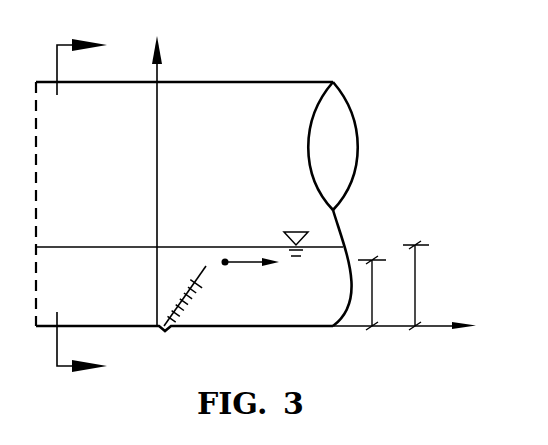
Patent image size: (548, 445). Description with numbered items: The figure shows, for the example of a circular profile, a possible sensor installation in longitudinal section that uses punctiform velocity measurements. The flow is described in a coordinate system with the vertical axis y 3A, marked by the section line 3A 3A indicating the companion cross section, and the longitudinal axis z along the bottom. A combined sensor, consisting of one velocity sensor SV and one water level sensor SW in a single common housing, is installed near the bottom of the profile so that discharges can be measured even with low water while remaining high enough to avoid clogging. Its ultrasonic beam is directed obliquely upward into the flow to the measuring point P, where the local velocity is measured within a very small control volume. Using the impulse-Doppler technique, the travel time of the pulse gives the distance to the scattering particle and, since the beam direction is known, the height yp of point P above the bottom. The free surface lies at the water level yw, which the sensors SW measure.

The section line 3A- 3A is at (69, 208).
The y coordinate axis y is at (166, 179).
The z coordinate axis z is at (412, 326).
The measuring point P is at (242, 259).
The cross-sectional coordinate of measuring point yp is at (378, 293).
The water level yw is at (425, 285).